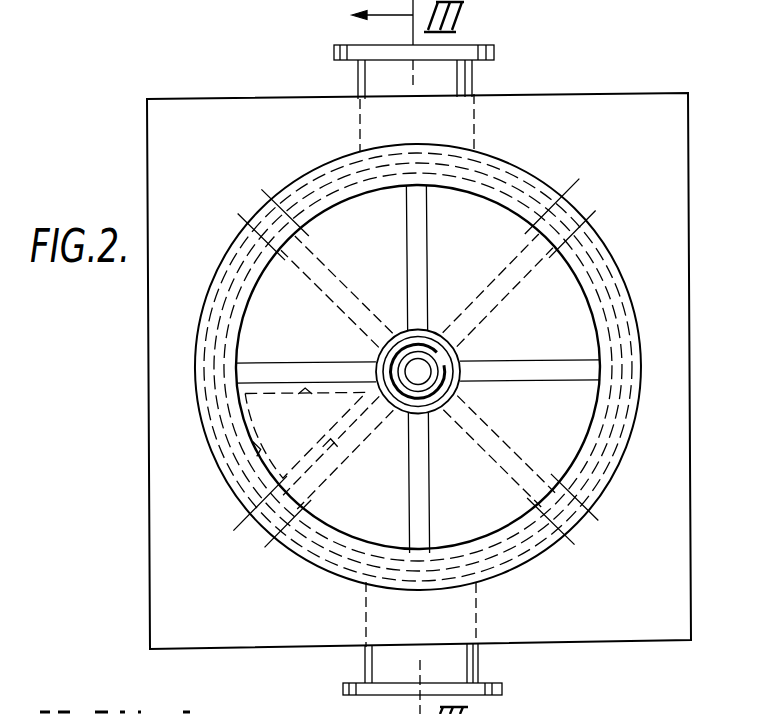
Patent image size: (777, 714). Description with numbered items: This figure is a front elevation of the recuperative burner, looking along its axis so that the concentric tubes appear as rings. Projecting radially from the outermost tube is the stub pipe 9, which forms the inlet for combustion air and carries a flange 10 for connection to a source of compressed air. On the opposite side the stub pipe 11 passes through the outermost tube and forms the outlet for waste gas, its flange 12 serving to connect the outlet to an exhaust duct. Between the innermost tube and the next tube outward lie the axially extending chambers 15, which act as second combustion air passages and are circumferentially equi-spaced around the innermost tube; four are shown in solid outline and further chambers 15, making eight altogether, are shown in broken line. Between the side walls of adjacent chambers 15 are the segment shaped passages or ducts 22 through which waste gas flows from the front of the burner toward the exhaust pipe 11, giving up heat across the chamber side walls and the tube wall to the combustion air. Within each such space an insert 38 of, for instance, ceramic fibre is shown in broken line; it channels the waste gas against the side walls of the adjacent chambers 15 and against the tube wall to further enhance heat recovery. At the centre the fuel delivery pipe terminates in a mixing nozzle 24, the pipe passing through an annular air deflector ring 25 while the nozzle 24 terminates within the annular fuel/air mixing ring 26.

The stub pipe 9 is at (478, 662).
The flange 10 is at (502, 694).
The stub pipe 11 is at (472, 77).
The flange 12 is at (494, 52).
The chamber 15 is at (411, 228).
The segment shaped passage 22 is at (255, 268).
The mixing nozzle 24 is at (415, 367).
The air deflector ring 25 is at (434, 337).
The fuel/air mixing ring 26 is at (457, 352).
The insert 38 is at (318, 439).